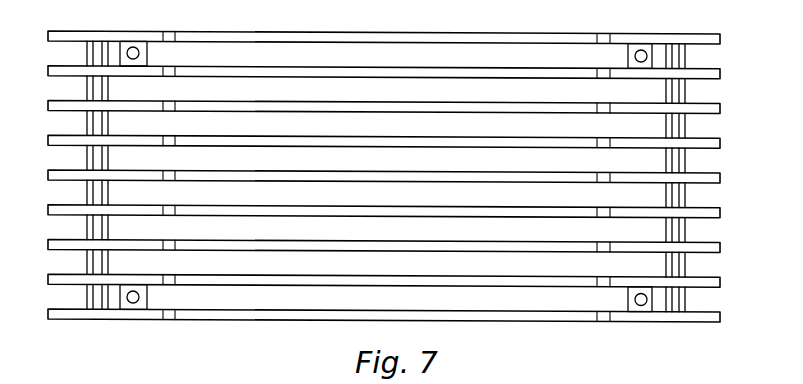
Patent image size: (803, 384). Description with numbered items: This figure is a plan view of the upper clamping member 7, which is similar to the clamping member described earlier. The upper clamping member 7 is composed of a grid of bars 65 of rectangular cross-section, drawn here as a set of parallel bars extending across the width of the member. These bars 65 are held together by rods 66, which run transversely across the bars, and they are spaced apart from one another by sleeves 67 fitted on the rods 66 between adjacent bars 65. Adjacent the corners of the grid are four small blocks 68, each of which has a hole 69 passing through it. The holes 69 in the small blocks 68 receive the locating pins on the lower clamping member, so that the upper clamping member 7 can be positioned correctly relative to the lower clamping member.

The upper clamping member 7 is at (539, 26).
The bars 65 is at (647, 44).
The rods 66 is at (678, 197).
The sleeves 67 is at (673, 128).
The small blocks 68 is at (147, 50).
The holes 69 is at (129, 48).